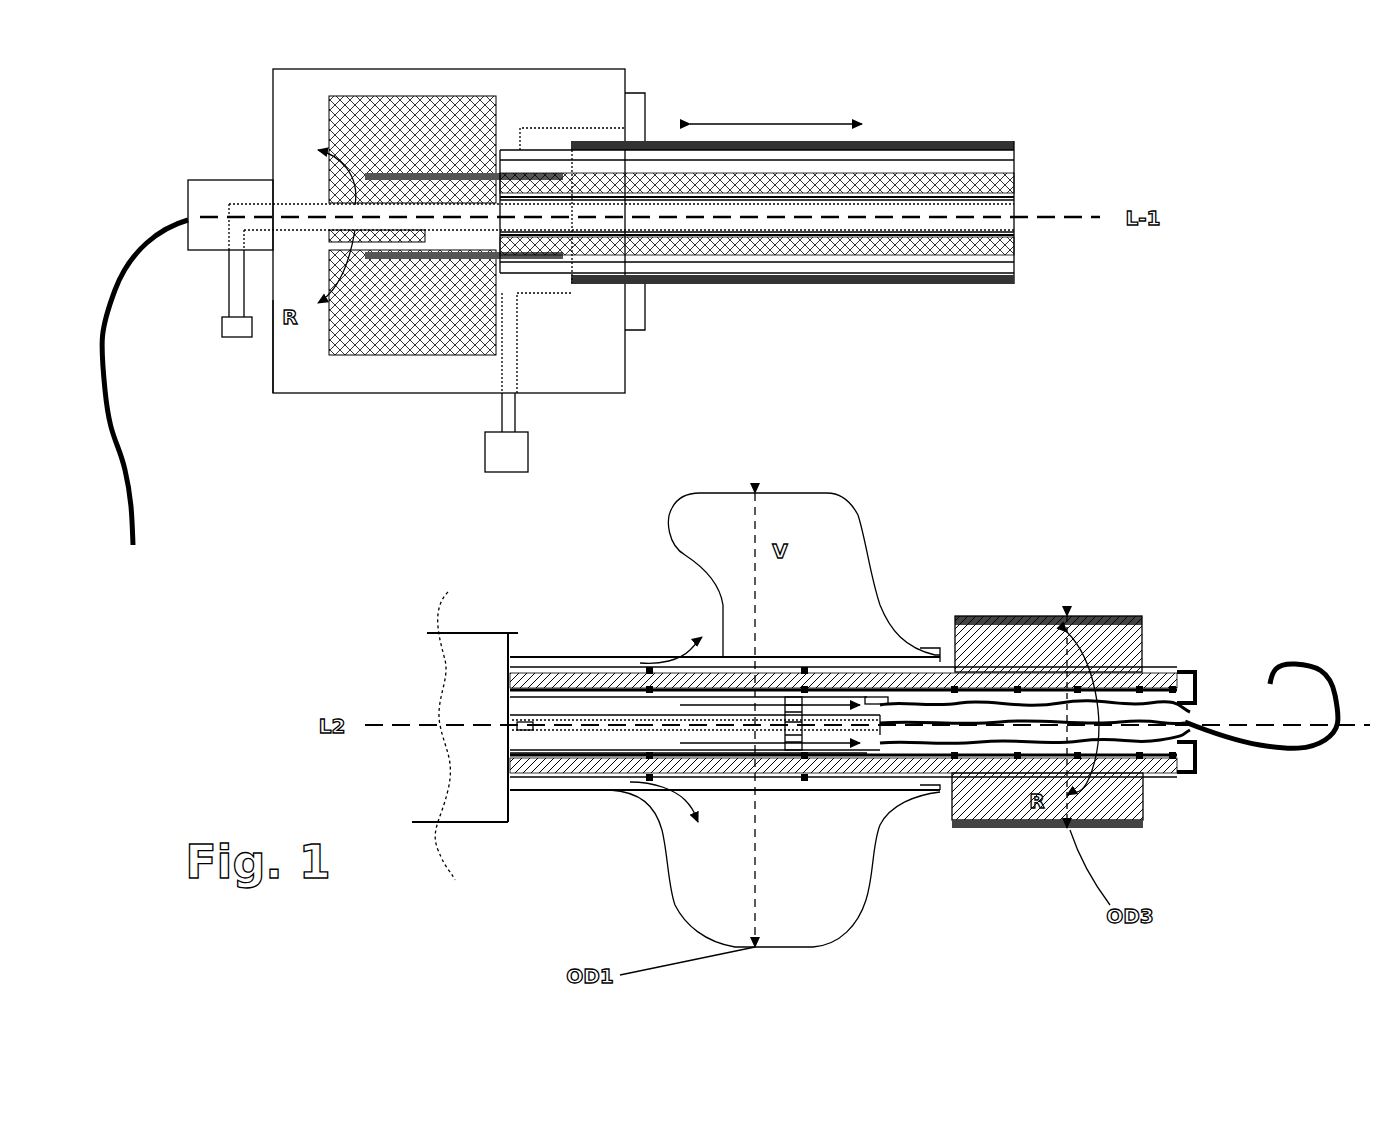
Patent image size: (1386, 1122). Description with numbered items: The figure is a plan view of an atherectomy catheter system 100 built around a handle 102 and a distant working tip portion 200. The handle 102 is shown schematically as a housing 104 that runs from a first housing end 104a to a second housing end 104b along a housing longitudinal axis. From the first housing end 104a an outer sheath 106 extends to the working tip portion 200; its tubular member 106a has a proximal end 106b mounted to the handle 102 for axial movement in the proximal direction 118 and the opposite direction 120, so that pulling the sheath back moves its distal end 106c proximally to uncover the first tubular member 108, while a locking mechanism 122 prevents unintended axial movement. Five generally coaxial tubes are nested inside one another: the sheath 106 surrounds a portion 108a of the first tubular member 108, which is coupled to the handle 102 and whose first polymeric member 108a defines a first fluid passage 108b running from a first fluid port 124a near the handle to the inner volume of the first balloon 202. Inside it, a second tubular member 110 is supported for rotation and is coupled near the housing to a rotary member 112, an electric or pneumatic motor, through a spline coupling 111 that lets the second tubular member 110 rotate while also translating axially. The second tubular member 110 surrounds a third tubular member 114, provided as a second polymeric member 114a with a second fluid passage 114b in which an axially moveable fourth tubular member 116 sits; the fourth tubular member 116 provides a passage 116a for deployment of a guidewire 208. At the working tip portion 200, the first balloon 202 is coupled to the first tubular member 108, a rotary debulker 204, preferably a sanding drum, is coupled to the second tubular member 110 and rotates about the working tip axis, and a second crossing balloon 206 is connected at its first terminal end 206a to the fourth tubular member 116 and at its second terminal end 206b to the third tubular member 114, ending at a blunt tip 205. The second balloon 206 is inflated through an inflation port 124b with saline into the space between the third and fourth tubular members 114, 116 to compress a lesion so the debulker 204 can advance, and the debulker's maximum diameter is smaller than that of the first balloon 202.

The catheter system 100 is at (1196, 434).
The handle 102 is at (273, 152).
The housing 104 is at (449, 231).
The first housing end 104a is at (625, 343).
The second housing end 104b is at (272, 367).
The outer sheath 106 is at (700, 285).
The tubular member 106a is at (955, 141).
The proximal end 106b is at (571, 285).
The distal end 106c is at (500, 803).
The first tubular member 108 is at (516, 634).
The first polymeric member 108a is at (962, 262).
The first fluid passage 108b is at (878, 600).
The second tubular member 110 is at (792, 243).
The spline coupling 111 is at (422, 298).
The rotary member 112 is at (352, 260).
The third tubular member 114 is at (845, 233).
The second polymeric member 114a is at (555, 752).
The second fluid passage 114b is at (695, 711).
The fourth tubular member 116 is at (320, 202).
The passage 116a is at (585, 730).
The proximal direction 118 is at (754, 125).
The axial movement 120 is at (885, 125).
The locking mechanism 122 is at (634, 113).
The first fluid port 124a is at (507, 440).
The inflation port 124b is at (237, 330).
The working tip portion 200 is at (933, 541).
The first balloon 202 is at (754, 490).
The rotary debulker 204 is at (972, 630).
The tip 205 is at (1190, 772).
The second balloon 206 is at (1165, 712).
The first terminal end 206a is at (873, 777).
The second terminal end 206b is at (1193, 745).
The guidewire 208 is at (123, 448).